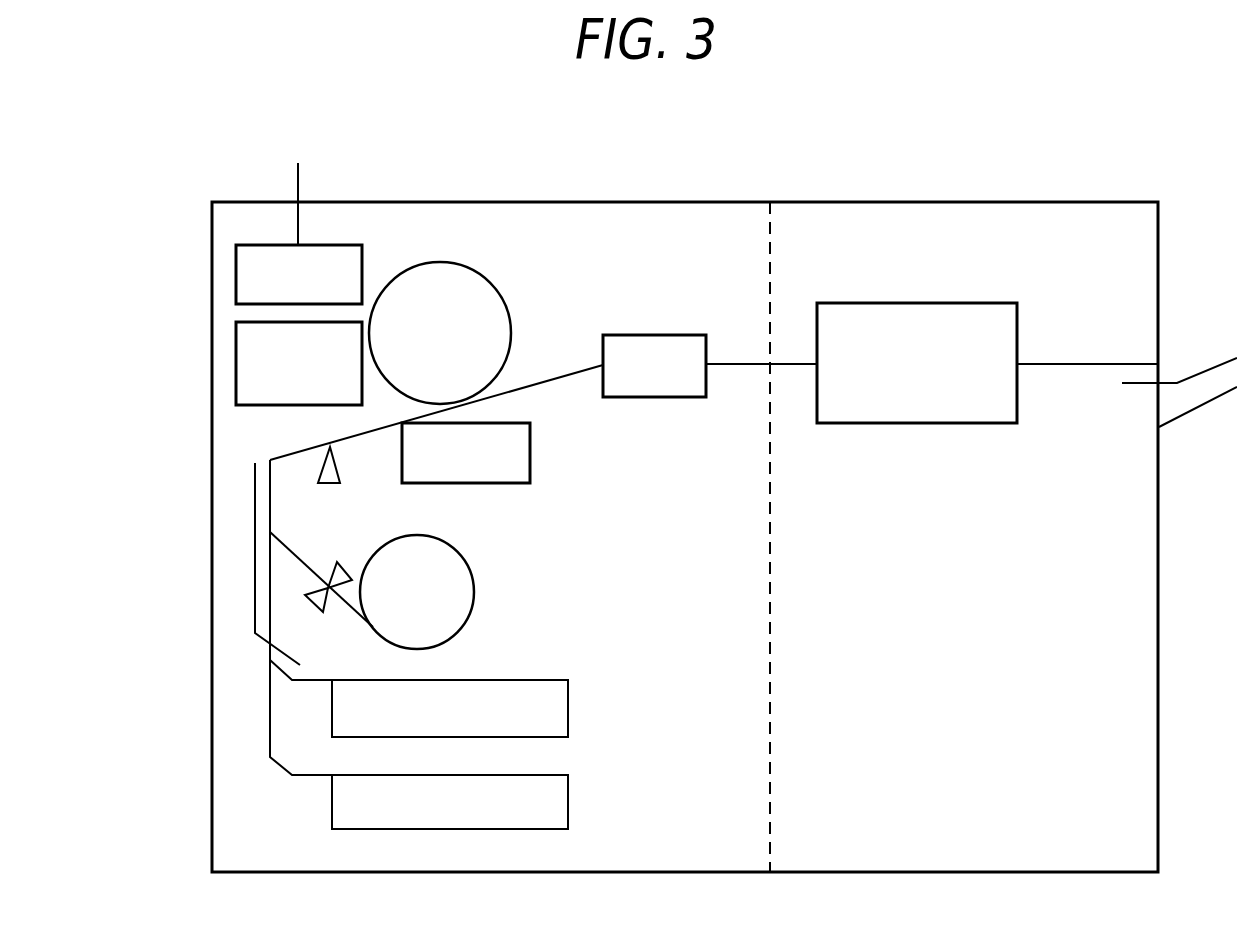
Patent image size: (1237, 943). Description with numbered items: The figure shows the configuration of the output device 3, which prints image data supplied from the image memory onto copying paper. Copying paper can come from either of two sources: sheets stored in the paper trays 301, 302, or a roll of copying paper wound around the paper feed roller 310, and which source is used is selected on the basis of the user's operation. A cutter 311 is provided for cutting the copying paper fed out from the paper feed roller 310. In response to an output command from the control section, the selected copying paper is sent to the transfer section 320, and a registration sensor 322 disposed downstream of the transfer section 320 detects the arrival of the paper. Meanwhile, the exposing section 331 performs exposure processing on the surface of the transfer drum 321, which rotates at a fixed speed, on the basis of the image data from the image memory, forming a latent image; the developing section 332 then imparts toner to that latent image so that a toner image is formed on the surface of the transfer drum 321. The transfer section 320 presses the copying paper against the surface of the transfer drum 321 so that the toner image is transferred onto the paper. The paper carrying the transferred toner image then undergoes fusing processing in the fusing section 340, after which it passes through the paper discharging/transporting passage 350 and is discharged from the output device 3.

The output device 3 is at (828, 188).
The paper tray 301 is at (568, 703).
The paper tray 302 is at (568, 800).
The paper feed roller 310 is at (473, 593).
The cutter 311 is at (325, 607).
The transfer section 320 is at (530, 450).
The transfer drum 321 is at (500, 290).
The registration sensor 322 is at (338, 472).
The exposing section 331 is at (236, 275).
The developing section 332 is at (236, 350).
The fusing section 340 is at (642, 335).
The paper discharging/transporting passage 350 is at (908, 303).